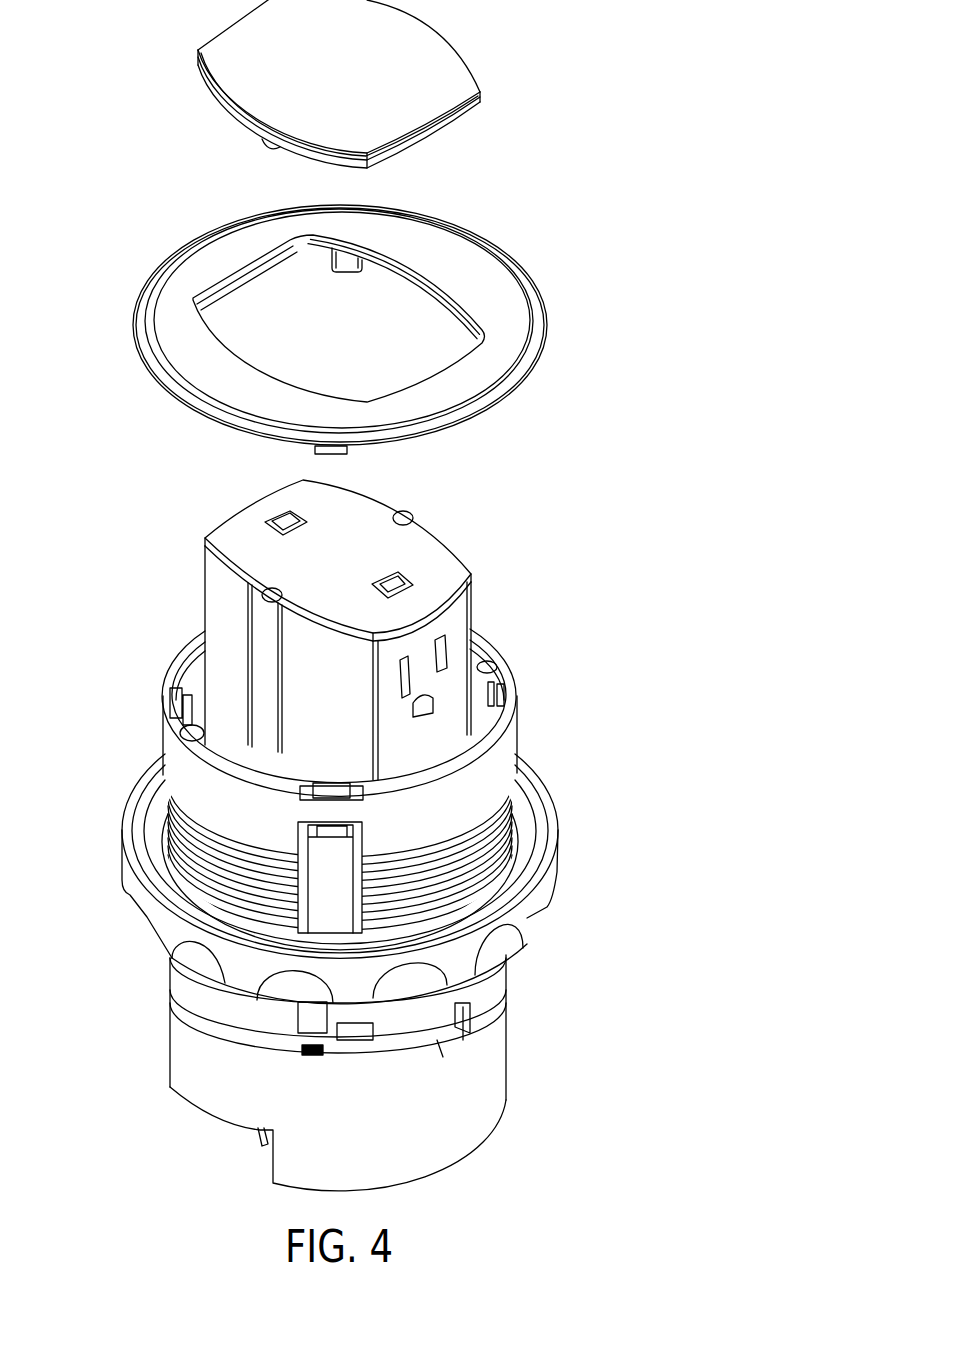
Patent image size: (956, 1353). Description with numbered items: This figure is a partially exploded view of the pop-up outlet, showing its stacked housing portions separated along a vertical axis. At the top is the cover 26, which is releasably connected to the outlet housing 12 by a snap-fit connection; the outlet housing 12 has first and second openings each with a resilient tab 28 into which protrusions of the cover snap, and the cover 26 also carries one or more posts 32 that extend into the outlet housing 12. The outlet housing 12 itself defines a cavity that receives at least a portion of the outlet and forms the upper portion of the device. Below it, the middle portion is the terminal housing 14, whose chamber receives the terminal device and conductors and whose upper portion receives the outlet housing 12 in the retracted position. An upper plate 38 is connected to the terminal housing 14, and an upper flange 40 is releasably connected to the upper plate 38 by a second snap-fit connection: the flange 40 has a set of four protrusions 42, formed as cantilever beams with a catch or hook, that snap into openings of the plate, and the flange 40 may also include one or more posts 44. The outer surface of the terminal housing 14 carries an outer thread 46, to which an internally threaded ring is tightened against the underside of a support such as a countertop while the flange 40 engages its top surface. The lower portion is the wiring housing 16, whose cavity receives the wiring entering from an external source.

The outlet housing 12 is at (408, 614).
The terminal housing 14 is at (353, 774).
The wiring housing 16 is at (495, 1058).
The cover 26 is at (440, 47).
The resilient tab 28 is at (393, 580).
The post 32 is at (265, 139).
The upper plate 38 is at (168, 700).
The upper flange 40 is at (355, 301).
The protrusion 42 is at (353, 250).
The post 44 is at (545, 905).
The outer thread 46 is at (510, 834).